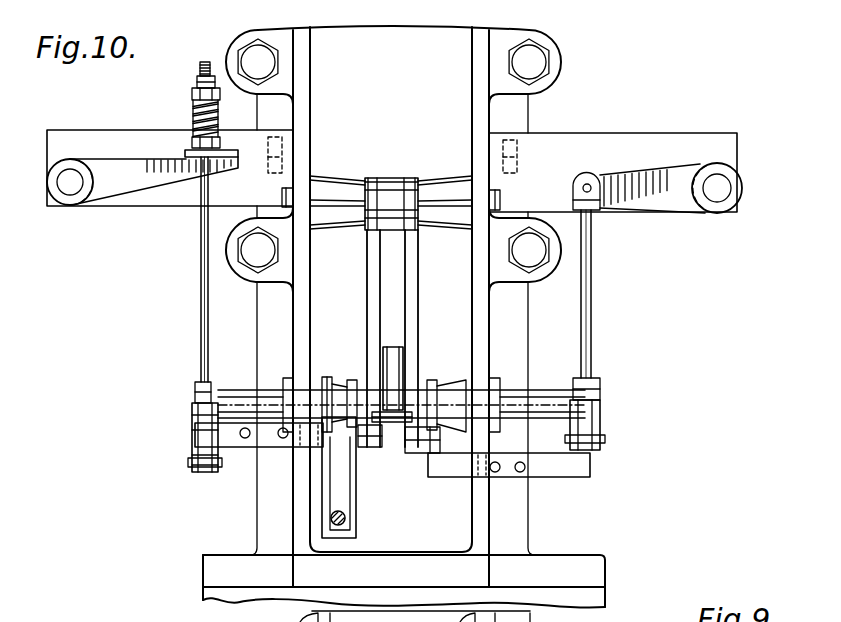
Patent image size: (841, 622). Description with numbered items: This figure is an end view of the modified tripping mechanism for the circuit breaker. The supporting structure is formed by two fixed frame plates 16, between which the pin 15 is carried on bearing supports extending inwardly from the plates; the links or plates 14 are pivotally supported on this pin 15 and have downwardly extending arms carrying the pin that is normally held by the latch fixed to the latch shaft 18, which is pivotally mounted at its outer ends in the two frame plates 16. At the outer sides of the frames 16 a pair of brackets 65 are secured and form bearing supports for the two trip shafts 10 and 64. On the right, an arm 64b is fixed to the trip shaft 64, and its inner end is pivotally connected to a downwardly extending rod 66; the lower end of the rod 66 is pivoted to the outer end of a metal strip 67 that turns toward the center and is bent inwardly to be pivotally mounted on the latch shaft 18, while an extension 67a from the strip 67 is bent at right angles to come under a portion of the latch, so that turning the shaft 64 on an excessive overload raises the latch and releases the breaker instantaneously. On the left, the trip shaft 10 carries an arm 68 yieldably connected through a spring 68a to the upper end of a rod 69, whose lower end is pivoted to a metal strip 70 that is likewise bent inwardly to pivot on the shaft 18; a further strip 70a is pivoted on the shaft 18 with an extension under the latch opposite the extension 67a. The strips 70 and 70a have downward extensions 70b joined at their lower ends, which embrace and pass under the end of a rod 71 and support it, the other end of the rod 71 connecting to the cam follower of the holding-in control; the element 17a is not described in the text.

The trip shaft 10 is at (63, 181).
The links or plates 14 is at (372, 290).
The pin 15 is at (368, 196).
The frame plates 16 is at (300, 115).
The slide block 17a is at (389, 372).
The latch shaft 18 is at (236, 402).
The trip shaft 64 is at (722, 190).
The arm 64b is at (673, 203).
The brackets 65 is at (140, 112).
The rod 66 is at (592, 262).
The metal strip 67 is at (566, 464).
The extension 67a is at (422, 455).
The arm 68 is at (137, 185).
The spring 68a is at (195, 108).
The rod 69 is at (201, 262).
The metal strip 70 is at (258, 436).
The strip 70a is at (376, 447).
The downward extensions 70b is at (351, 485).
The rod 71 is at (347, 518).